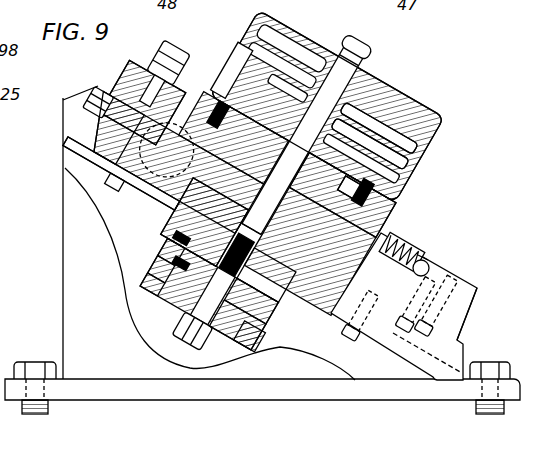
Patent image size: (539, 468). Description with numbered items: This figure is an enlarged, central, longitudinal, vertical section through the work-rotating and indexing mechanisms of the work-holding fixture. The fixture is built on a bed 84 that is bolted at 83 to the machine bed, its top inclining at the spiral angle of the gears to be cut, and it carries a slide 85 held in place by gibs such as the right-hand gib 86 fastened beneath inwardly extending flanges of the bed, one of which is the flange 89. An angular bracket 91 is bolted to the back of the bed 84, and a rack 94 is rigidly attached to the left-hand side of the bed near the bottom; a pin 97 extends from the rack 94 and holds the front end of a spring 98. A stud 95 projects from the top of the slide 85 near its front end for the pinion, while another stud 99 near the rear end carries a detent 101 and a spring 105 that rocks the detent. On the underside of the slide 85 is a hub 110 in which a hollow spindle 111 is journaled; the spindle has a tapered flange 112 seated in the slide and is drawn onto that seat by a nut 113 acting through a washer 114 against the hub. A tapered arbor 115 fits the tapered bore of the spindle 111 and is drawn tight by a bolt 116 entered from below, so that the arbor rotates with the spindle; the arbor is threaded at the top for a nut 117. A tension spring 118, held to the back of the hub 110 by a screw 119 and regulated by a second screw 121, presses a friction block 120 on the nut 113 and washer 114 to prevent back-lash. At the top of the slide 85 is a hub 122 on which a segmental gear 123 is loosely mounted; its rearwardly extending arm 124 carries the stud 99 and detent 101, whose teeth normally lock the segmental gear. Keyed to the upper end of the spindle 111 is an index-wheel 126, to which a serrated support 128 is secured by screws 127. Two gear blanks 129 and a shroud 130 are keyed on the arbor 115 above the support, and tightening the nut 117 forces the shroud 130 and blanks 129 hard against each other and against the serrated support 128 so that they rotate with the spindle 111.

The bolts 83 is at (35, 364).
The bed 84 is at (262, 243).
The slide 85 is at (108, 180).
The right-hand gib 86 is at (141, 191).
The flange 89 is at (455, 330).
The angular bracket 91 is at (99, 100).
The rack 94 is at (470, 291).
The stud 95 is at (416, 249).
The pin 97 is at (430, 268).
The spring 98 is at (436, 259).
The stud 99 is at (158, 80).
The detent 101 is at (172, 70).
The spring 105 is at (186, 52).
The hub 110 is at (277, 301).
The hollow spindle 111 is at (263, 320).
The tapered flange 112 is at (256, 173).
The nut 113 is at (238, 350).
The washer 114 is at (247, 333).
The arbor 115 is at (266, 225).
The bolt 116 is at (190, 330).
The nut 117 is at (372, 44).
The tension spring 118 is at (150, 264).
The screw 119 is at (176, 231).
The friction block 120 is at (144, 293).
The screw 121 is at (153, 258).
The hub 122 is at (385, 211).
The segmental gear 123 is at (400, 233).
The rearwardly extending arm 124 is at (137, 108).
The index-wheel 126 is at (393, 207).
The screws 127 is at (228, 72).
The serrated support 128 is at (428, 156).
The gear blanks 129 is at (422, 140).
The shroud 130 is at (440, 118).